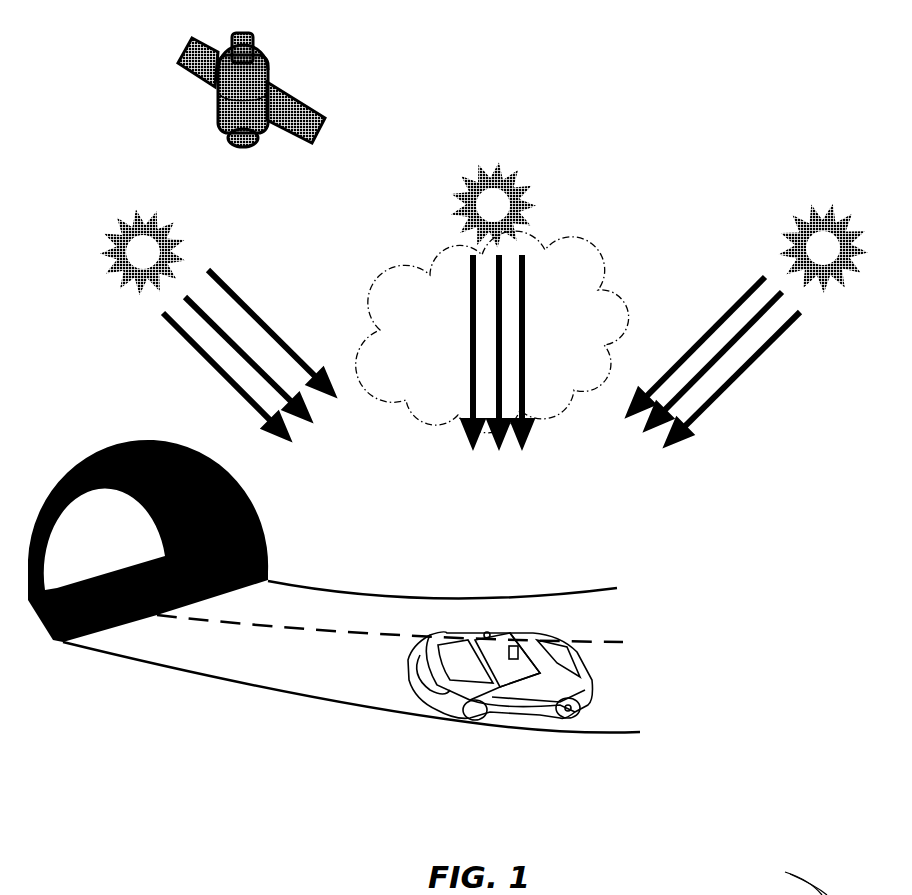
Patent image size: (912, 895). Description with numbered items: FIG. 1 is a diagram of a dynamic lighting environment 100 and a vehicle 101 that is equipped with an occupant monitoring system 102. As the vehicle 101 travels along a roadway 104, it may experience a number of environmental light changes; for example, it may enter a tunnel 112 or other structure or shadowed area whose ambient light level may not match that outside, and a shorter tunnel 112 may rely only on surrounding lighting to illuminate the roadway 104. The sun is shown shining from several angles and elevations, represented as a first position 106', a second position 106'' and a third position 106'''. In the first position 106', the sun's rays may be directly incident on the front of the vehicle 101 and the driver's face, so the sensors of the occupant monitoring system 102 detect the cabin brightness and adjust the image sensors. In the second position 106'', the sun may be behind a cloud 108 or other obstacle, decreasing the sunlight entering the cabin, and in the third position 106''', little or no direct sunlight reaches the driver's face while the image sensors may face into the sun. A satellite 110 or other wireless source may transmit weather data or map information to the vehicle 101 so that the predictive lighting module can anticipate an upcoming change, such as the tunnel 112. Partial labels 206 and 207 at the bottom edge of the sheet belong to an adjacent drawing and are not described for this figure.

The dynamic lighting environment 100 is at (80, 318).
The vehicle 101 is at (487, 632).
The occupant monitoring system 102 is at (512, 645).
The roadway 104 is at (385, 618).
The first position 106' is at (130, 232).
The second position 106'' is at (477, 182).
The third position 106''' is at (808, 231).
The cloud 108 is at (410, 330).
The satellite 110 is at (307, 117).
The tunnel 112 is at (102, 450).
The partial label (next figure) 206 is at (194, 886).
The partial label (next figure) 207 is at (855, 894).